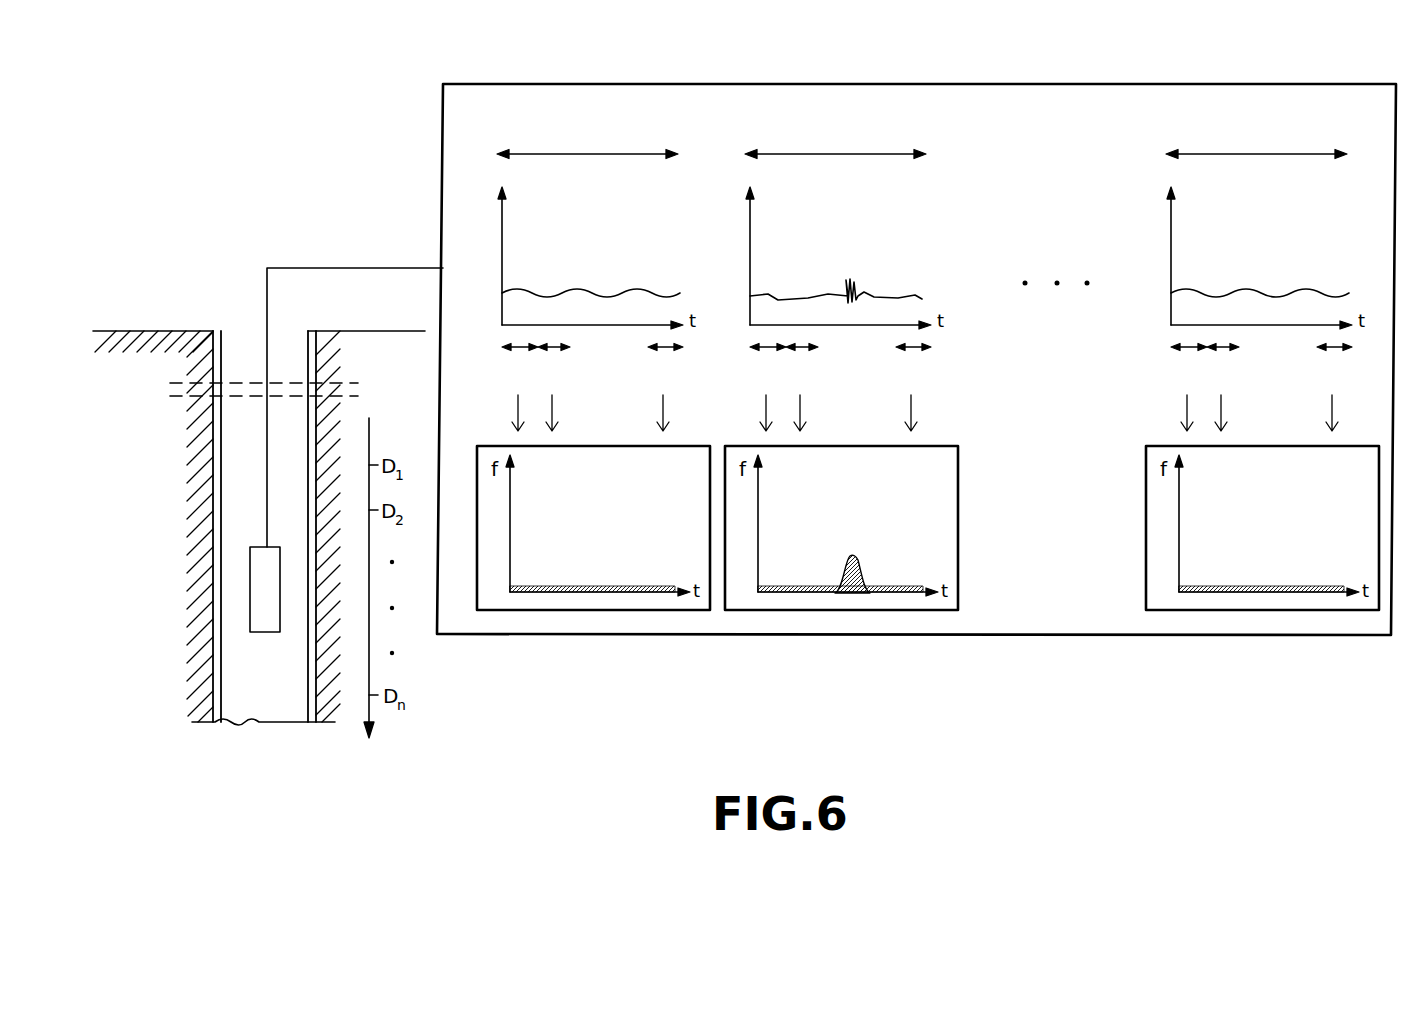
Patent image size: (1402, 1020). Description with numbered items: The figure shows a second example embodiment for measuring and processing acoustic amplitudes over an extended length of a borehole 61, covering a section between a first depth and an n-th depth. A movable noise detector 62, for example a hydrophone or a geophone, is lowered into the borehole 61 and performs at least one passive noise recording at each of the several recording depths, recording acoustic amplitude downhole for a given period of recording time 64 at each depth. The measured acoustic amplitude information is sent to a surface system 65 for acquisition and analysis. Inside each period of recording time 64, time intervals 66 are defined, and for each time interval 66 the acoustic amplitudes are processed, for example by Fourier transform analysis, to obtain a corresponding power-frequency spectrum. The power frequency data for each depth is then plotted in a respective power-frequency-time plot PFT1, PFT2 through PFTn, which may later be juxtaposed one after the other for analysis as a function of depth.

The borehole 61 is at (280, 723).
The noise detector 62 is at (250, 623).
The period of recording time 64 is at (922, 143).
The surface system 65 is at (612, 634).
The time interval 66 is at (927, 364).
The power-frequency-time plot PFT1 is at (695, 611).
The power-frequency-time plot PFT2 is at (933, 613).
The power-frequency-time plot PFTn is at (1342, 614).